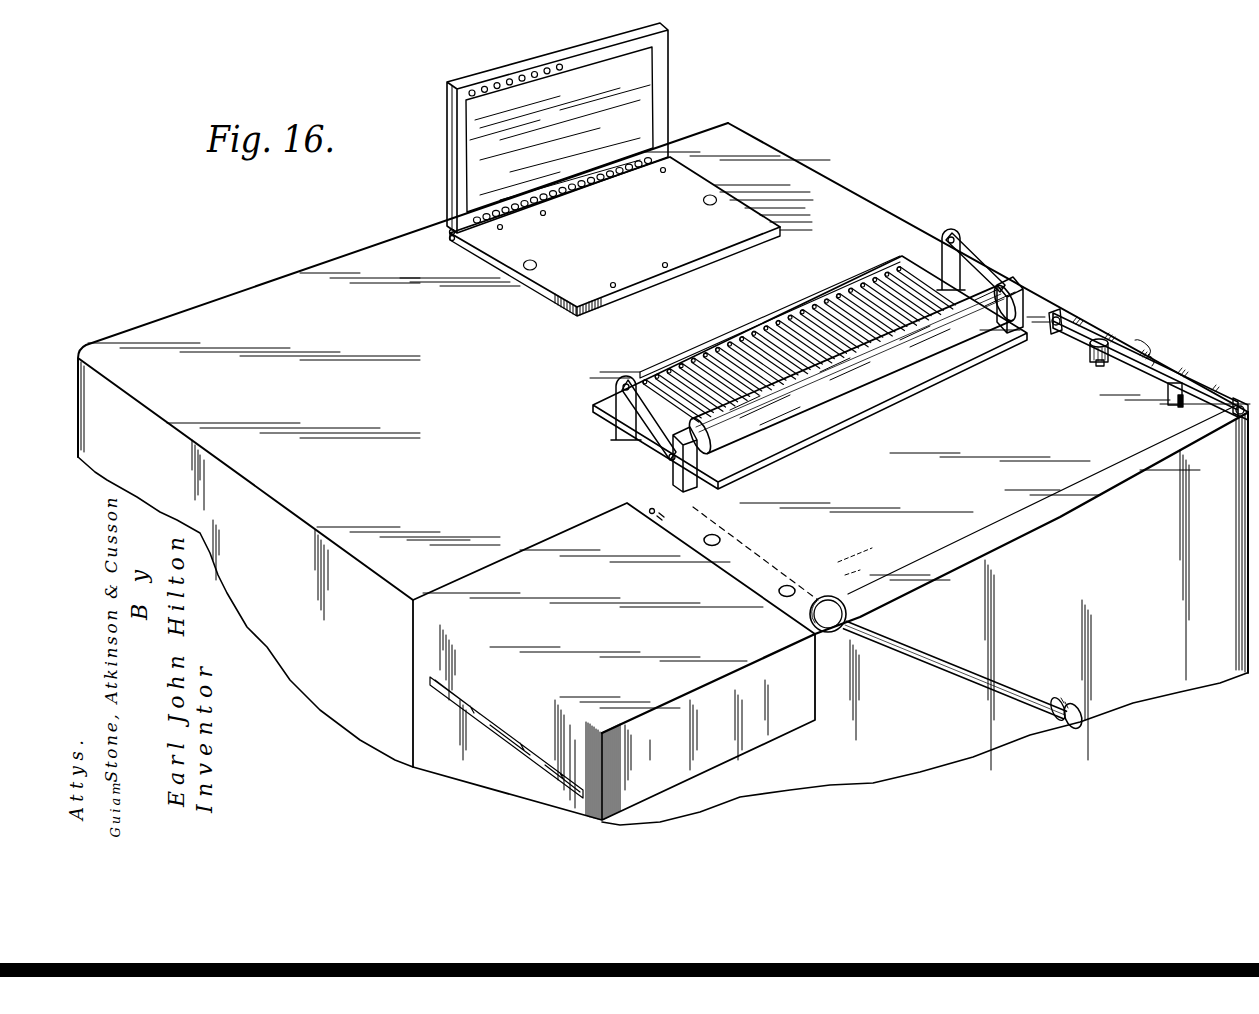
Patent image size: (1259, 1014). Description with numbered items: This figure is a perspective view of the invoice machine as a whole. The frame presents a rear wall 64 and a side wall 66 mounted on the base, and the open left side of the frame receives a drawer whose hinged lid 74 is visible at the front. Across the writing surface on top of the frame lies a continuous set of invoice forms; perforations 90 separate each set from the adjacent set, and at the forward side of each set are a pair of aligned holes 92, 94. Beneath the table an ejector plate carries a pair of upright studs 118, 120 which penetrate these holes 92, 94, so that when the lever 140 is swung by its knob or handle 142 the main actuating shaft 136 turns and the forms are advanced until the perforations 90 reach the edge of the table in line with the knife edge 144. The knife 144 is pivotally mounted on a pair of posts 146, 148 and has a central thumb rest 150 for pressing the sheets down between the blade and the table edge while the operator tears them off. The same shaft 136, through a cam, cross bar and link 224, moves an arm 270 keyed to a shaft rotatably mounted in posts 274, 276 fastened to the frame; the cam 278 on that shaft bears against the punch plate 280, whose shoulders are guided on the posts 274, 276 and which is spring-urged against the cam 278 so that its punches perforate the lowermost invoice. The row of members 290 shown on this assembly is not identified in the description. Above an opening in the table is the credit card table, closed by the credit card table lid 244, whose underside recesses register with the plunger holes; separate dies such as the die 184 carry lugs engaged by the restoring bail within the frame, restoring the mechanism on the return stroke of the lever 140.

The rear wall 64 is at (272, 278).
The side wall 66 is at (873, 206).
The hinged lid 74 is at (480, 590).
The credit card table lid 244 is at (455, 168).
The punch plate 280 is at (972, 353).
The small rollers 290 is at (678, 372).
The cam 278 is at (1008, 290).
The link 224 is at (946, 262).
The die 184 is at (640, 458).
The arm 270 is at (972, 263).
The post 274 is at (680, 480).
The post 276 is at (1020, 303).
The thumb rest 150 is at (1150, 345).
The post 146 is at (1060, 318).
The post 148 is at (1240, 400).
The upright stud 118 is at (1097, 348).
The knife edge 144 is at (1172, 396).
The upright stud 120 is at (1175, 408).
The hole 92 is at (705, 540).
The hole 94 is at (780, 591).
The perforations 90 is at (772, 555).
The knob or handle 142 is at (810, 615).
The lever 140 is at (988, 672).
The main actuating shaft 136 is at (1082, 728).